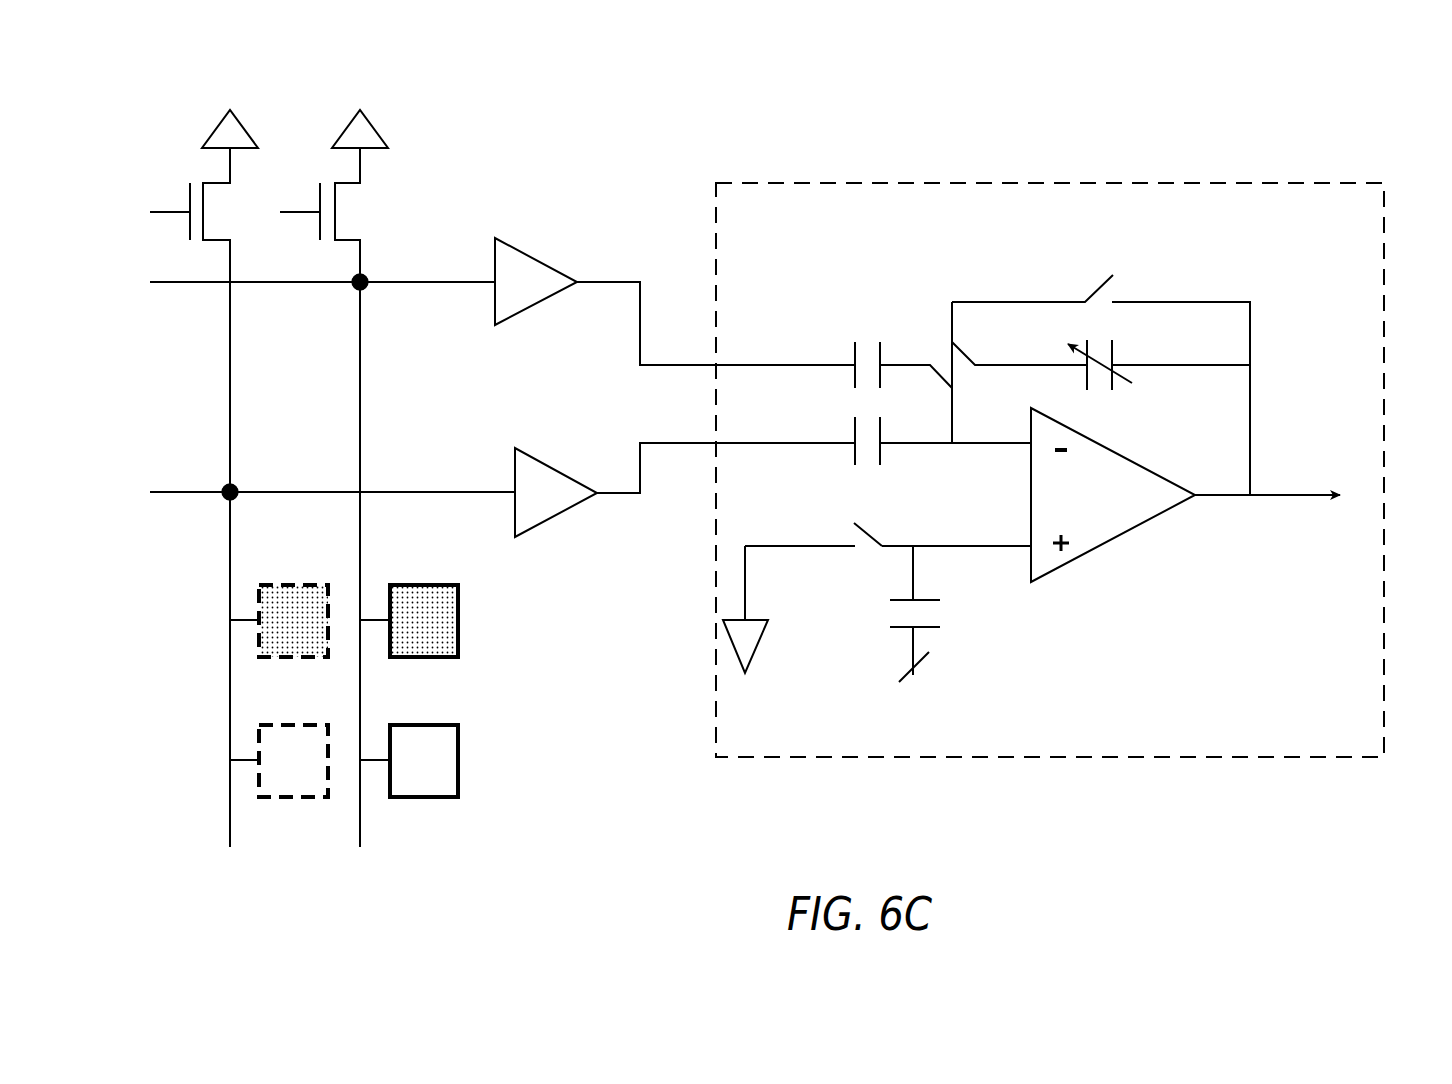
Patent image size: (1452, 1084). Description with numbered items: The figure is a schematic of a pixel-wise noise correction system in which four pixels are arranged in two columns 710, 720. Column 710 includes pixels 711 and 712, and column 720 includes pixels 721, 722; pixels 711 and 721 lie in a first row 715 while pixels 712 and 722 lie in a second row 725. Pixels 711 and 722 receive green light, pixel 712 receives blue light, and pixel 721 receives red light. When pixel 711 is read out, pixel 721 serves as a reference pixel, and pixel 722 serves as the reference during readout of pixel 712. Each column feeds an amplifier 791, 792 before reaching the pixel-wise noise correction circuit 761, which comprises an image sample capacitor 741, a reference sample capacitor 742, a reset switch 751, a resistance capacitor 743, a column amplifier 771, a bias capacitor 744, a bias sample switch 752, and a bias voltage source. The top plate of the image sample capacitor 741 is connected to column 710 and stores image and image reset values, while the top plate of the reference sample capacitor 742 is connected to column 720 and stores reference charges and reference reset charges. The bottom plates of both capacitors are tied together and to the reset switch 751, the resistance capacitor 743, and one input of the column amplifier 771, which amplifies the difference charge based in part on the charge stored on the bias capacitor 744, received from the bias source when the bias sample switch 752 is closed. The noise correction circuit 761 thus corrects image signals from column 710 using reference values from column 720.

The column 710 is at (398, 100).
The column 720 is at (268, 100).
The pixel 711 is at (428, 583).
The pixel 721 is at (296, 583).
The pixel 712 is at (428, 723).
The pixel 722 is at (296, 723).
The first row 715 is at (225, 583).
The second row 725 is at (225, 723).
The first column amplifier 791 is at (526, 240).
The second column amplifier 792 is at (560, 462).
The image sample capacitor 741 is at (907, 338).
The reference sample capacitor 742 is at (907, 467).
The resistance capacitor 743 is at (1122, 348).
The bias capacitor 744 is at (940, 614).
The reset switch 751 is at (1142, 270).
The bias sample switch 752 is at (905, 550).
The pixel-wise noise correction circuit 761 is at (1384, 183).
The column amplifier 771 is at (1115, 546).